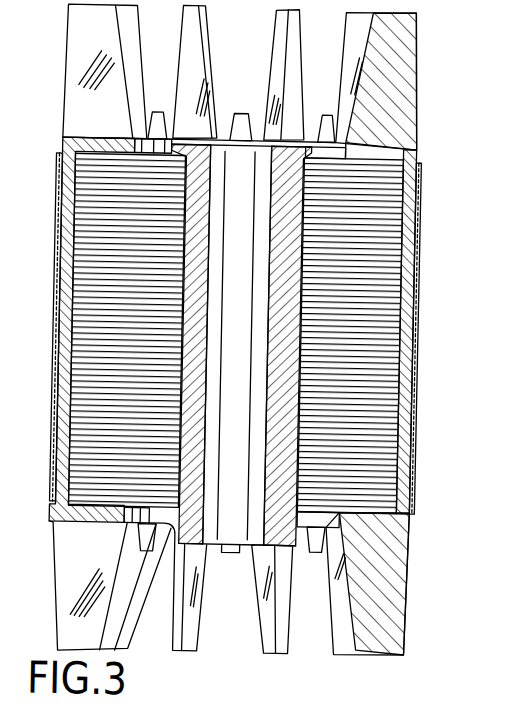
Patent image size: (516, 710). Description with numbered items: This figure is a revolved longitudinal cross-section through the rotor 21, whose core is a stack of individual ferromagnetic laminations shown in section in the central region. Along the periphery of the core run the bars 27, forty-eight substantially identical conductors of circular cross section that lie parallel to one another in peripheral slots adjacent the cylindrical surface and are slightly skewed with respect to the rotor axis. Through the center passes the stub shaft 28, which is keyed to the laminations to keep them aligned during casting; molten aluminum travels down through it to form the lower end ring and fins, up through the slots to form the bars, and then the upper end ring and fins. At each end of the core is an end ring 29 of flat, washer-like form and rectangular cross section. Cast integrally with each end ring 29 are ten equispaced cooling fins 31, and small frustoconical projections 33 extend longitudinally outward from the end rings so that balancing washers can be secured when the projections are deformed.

The rotor 21 is at (44, 275).
The bars 27 is at (65, 349).
The stub shaft 28 is at (241, 557).
The end ring 29 is at (57, 154).
The cooling fins 31 is at (77, 19).
The frustoconical projections 33 is at (240, 110).